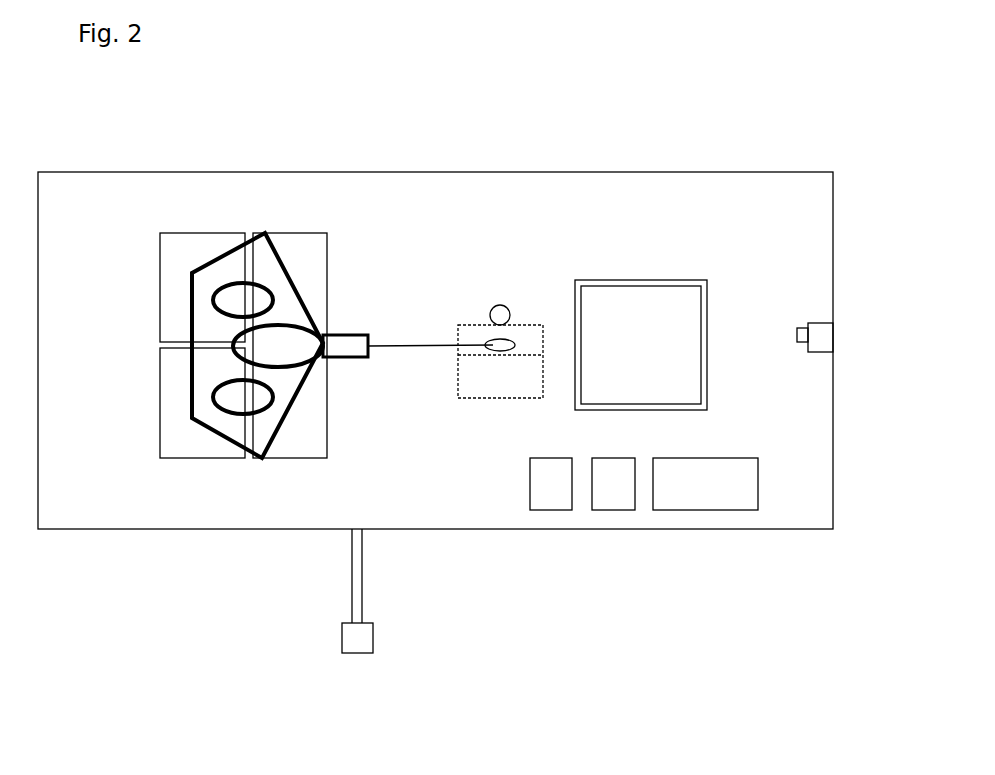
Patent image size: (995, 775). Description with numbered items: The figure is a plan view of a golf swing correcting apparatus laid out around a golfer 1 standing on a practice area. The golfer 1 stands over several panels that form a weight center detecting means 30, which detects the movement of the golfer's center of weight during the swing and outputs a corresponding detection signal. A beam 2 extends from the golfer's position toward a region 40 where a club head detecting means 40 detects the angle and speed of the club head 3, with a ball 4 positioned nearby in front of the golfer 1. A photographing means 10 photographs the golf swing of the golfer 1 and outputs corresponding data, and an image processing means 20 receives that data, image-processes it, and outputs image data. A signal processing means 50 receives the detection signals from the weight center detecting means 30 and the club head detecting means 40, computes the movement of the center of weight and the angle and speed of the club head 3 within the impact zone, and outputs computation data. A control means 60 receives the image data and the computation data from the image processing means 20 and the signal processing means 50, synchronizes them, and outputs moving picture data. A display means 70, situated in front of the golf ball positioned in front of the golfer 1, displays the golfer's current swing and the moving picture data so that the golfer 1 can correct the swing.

The golfer 1 is at (228, 452).
The light beam 2 is at (398, 338).
The club head 3 is at (488, 356).
The object / particle 4 is at (500, 302).
The photographing means 10 is at (340, 635).
The image processing means 20 is at (553, 500).
The weight center detecting means 30 is at (158, 250).
The club head detecting means 40 is at (511, 383).
The signal processing means 50 is at (612, 502).
The control means 60 is at (712, 500).
The display means 70 is at (643, 310).